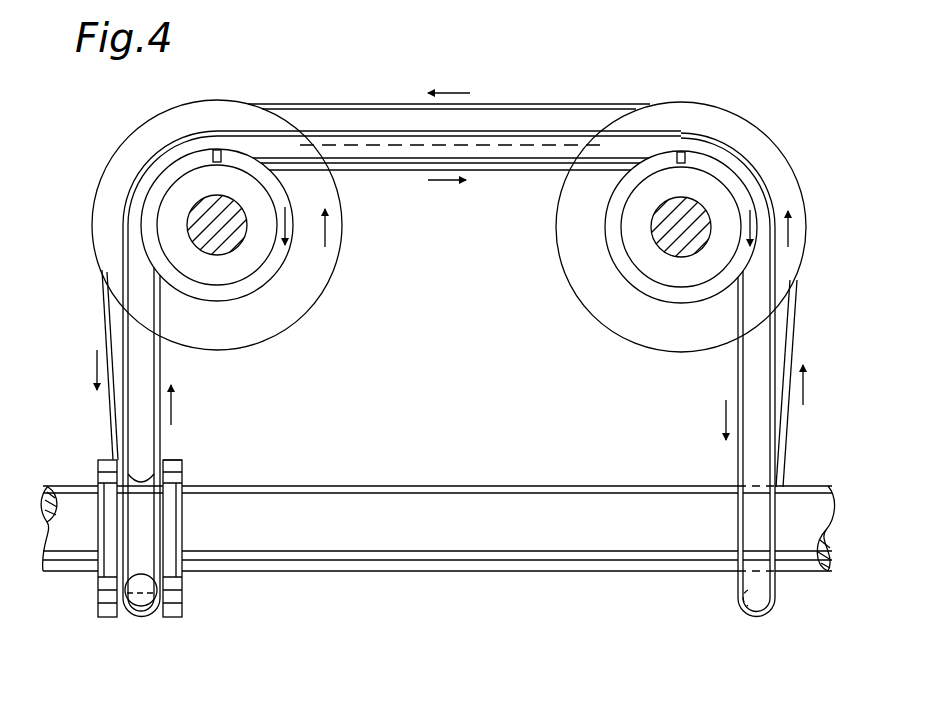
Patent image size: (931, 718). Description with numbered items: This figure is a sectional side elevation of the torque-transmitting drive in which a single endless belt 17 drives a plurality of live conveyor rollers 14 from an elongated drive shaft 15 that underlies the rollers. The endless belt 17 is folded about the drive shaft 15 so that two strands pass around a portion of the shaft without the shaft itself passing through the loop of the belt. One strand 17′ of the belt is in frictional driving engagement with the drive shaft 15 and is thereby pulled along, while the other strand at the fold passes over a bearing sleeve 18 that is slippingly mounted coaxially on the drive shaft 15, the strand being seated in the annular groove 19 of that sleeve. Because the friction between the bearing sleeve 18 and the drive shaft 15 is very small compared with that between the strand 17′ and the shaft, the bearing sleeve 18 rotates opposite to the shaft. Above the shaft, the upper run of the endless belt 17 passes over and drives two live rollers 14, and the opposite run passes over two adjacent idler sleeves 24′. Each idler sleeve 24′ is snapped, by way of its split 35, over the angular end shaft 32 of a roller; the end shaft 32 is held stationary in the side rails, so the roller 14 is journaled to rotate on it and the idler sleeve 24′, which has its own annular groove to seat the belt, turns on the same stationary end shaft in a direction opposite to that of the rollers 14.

The driven conveyor roller 14 is at (132, 136).
The drive shaft 15 is at (471, 526).
The endless belt 17 is at (368, 117).
The belt strand 17′ is at (738, 607).
The bearing sleeve 18 is at (170, 512).
The annular groove 19 is at (163, 460).
The idler sleeve 24′ is at (280, 273).
The end shaft 32 is at (221, 250).
The split 35 is at (218, 150).